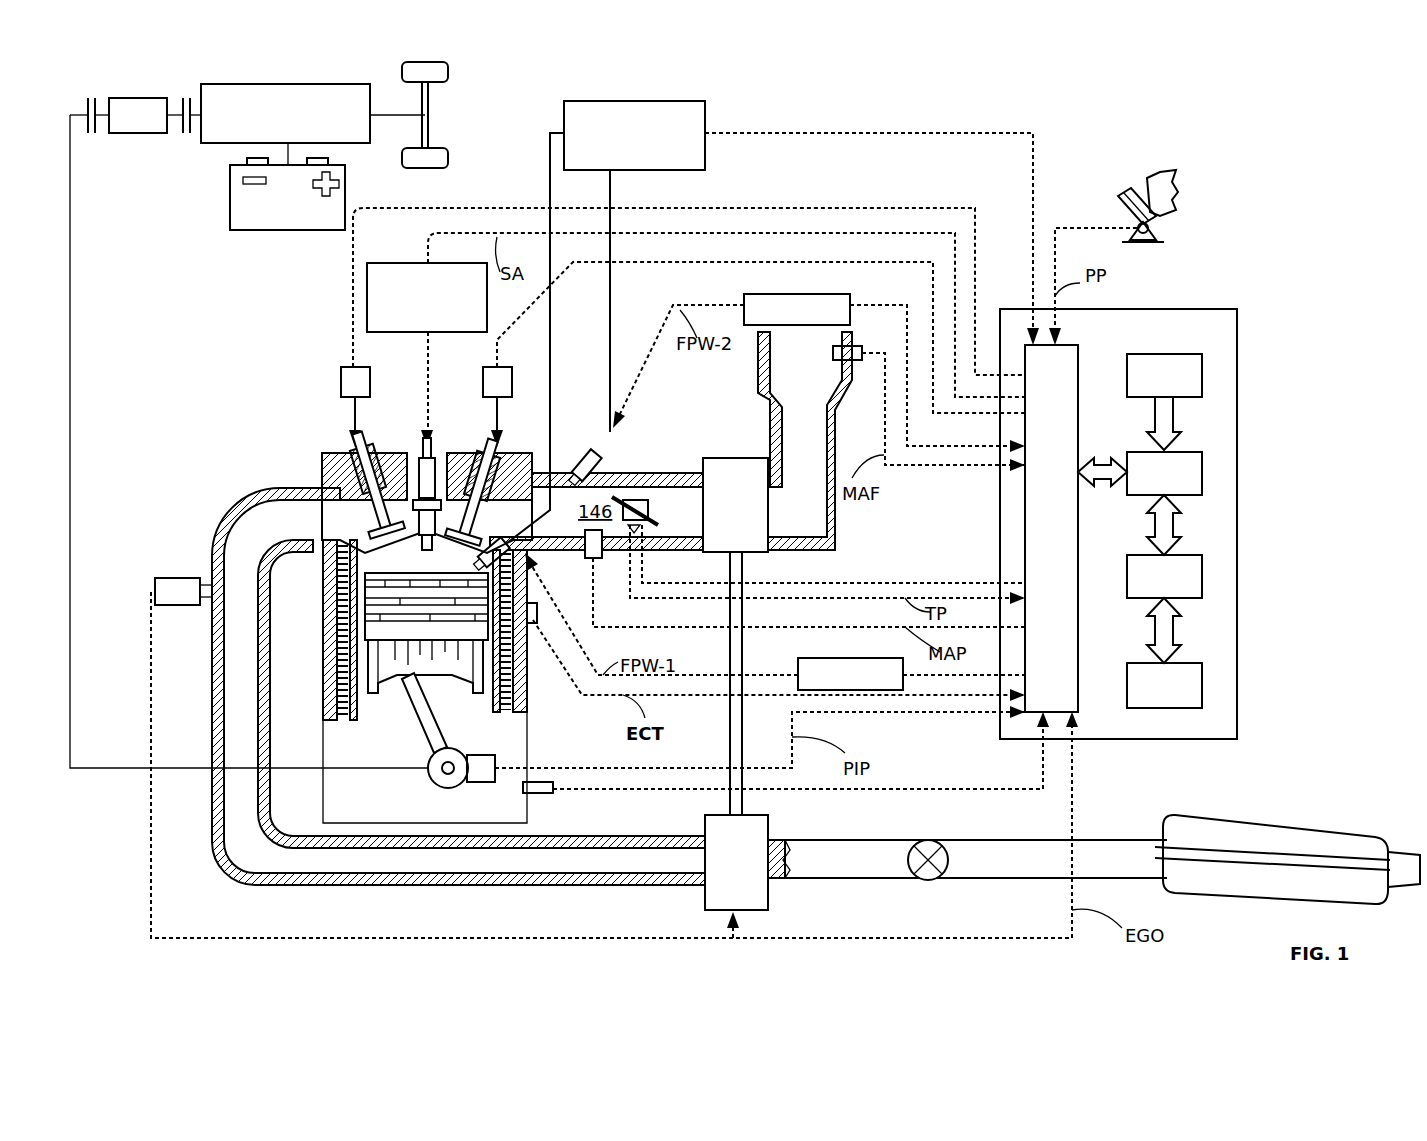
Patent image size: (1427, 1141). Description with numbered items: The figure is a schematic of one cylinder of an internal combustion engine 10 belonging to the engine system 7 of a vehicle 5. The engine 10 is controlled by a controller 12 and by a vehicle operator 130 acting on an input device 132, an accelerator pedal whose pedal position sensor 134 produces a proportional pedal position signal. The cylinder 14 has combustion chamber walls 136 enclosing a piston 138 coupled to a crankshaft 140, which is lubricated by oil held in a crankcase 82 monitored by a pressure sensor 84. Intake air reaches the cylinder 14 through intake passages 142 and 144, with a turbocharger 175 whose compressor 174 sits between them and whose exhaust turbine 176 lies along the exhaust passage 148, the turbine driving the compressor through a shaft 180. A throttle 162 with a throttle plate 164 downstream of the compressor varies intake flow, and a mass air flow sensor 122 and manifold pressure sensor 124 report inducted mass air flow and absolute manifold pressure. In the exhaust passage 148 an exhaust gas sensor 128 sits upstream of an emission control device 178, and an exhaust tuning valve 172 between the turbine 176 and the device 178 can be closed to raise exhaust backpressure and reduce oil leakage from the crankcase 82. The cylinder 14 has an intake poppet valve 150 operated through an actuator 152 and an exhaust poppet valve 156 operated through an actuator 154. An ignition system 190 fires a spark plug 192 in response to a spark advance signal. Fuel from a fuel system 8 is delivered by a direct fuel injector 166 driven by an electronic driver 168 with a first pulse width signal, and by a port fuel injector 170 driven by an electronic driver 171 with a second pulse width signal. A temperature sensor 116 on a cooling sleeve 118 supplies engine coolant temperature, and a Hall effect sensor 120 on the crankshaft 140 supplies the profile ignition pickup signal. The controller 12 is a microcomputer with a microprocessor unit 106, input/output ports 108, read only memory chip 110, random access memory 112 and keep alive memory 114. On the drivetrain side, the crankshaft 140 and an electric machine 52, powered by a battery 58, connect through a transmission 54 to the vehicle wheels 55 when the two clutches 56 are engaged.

The vehicle 5 is at (1343, 113).
The engine system 7 is at (1317, 736).
The fuel system 8 is at (680, 101).
The internal combustion engine 10 is at (240, 396).
The controller 12 is at (1162, 511).
The cylinder 14 is at (330, 578).
The electric machine 52 is at (135, 133).
The transmission 54 is at (345, 143).
The vehicle wheels 55 is at (425, 168).
The clutches 56 is at (88, 108).
The battery 58 is at (288, 230).
The crankcase 82 is at (527, 823).
The sensor 84 is at (553, 793).
The microprocessor unit 106 is at (1202, 468).
The input/output ports 108 is at (1080, 352).
The read only memory chip 110 is at (1202, 373).
The random access memory 112 is at (1202, 572).
The keep alive memory 114 is at (1202, 682).
The temperature sensor 116 is at (540, 613).
The cooling sleeve 118 is at (530, 625).
The Hall effect sensor 120 is at (483, 783).
The mass air flow sensor 122 is at (853, 346).
The manifold pressure sensor 124 is at (596, 560).
The exhaust gas sensor 128 is at (155, 582).
The vehicle operator 130 is at (1161, 249).
The input device 132 is at (1122, 205).
The pedal position sensor 134 is at (1150, 230).
The combustion chamber walls 136 is at (362, 710).
The piston 138 is at (408, 665).
The crankshaft 140 is at (438, 788).
The intake air passage 142 is at (805, 441).
The intake air passage 144 is at (827, 552).
The exhaust passage 148 is at (458, 686).
The intake poppet valve 150 is at (445, 490).
The actuator 152 is at (484, 378).
The actuator 154 is at (343, 368).
The exhaust poppet valve 156 is at (335, 495).
The throttle 162 is at (655, 500).
The throttle plate 164 is at (618, 496).
The fuel injector 166 is at (498, 538).
The electronic driver 168 is at (806, 659).
The fuel injector 170 is at (580, 456).
The electronic driver 171 is at (746, 298).
The exhaust tuning valve 172 is at (938, 842).
The compressor 174 is at (735, 505).
The turbocharger 175 is at (740, 945).
The exhaust turbine 176 is at (736, 862).
The emission control device 178 is at (1345, 823).
The shaft 180 is at (742, 800).
The ignition system 190 is at (412, 263).
The spark plug 192 is at (423, 492).